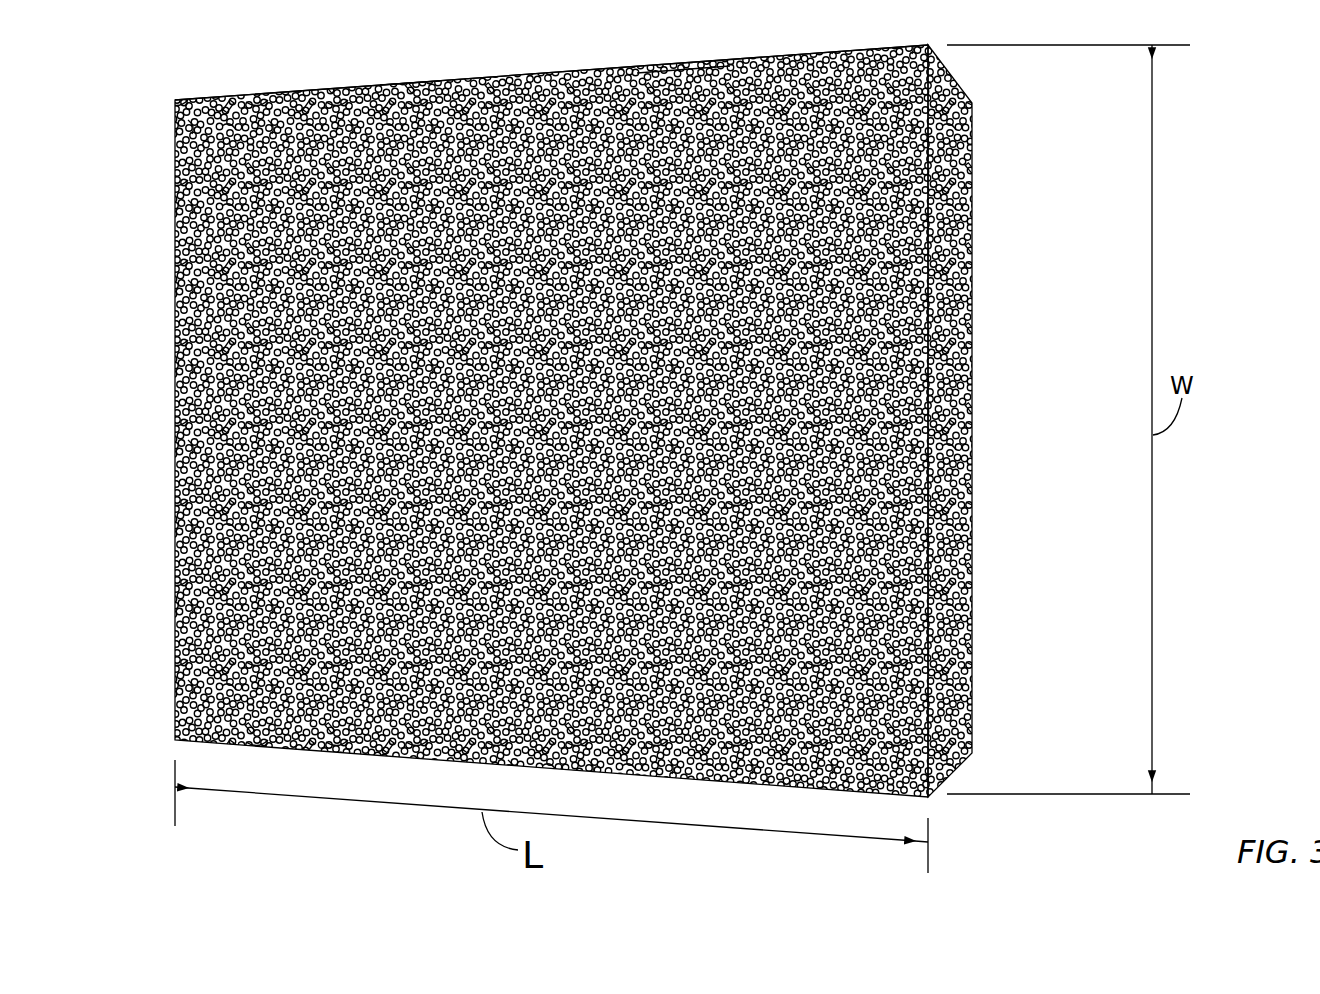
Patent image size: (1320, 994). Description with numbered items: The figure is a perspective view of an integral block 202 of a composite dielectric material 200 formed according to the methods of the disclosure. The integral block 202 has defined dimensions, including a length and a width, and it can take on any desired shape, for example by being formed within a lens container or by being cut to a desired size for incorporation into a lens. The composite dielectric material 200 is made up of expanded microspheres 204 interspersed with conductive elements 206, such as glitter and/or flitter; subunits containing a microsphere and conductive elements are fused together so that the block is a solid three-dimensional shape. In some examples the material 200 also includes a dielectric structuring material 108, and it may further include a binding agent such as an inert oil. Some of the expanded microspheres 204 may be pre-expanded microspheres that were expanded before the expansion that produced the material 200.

The composite dielectric material 200 is at (513, 398).
The dielectric structuring material 108 is at (182, 293).
The integral block 202 is at (809, 53).
The expanded microspheres 204 is at (730, 62).
The conductive elements 206 is at (414, 84).